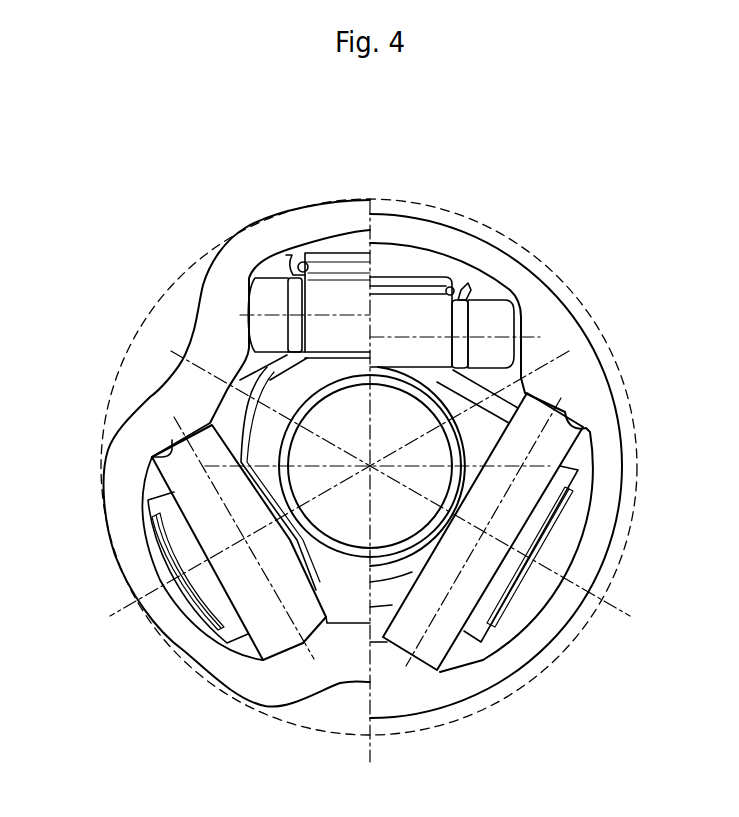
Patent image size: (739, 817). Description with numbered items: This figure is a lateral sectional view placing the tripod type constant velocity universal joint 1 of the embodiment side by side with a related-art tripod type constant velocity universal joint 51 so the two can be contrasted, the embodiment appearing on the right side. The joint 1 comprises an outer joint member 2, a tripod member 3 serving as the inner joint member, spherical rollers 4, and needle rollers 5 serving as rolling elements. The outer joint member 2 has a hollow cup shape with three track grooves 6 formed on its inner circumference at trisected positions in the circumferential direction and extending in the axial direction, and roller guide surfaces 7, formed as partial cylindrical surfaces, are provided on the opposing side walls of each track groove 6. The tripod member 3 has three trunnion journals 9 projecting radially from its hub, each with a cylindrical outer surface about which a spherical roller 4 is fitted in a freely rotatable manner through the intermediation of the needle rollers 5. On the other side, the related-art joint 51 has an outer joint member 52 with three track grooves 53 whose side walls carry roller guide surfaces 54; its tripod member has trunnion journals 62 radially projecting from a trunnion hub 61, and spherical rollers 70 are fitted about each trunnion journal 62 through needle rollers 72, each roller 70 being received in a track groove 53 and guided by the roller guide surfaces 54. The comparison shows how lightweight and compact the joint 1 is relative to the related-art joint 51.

The tripod type constant velocity universal joint 1 is at (537, 237).
The outer joint member 2 is at (540, 270).
The tripod member 3 is at (490, 405).
The spherical roller 4 is at (510, 328).
The needle roller 5 is at (459, 306).
The track groove 6 is at (438, 265).
The roller guide surface 7 is at (583, 437).
The trunnion journal 9 is at (400, 312).
The tripod type constant velocity universal joint 51 is at (248, 222).
The outer joint member 52 is at (207, 275).
The track groove 53 is at (295, 253).
The roller guide surface 54 is at (152, 457).
The trunnion hub 61 is at (247, 414).
The trunnion journal 62 is at (345, 295).
The spherical roller 70 is at (262, 300).
The needle roller 72 is at (297, 327).